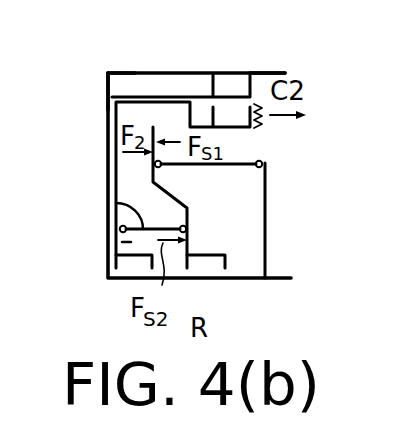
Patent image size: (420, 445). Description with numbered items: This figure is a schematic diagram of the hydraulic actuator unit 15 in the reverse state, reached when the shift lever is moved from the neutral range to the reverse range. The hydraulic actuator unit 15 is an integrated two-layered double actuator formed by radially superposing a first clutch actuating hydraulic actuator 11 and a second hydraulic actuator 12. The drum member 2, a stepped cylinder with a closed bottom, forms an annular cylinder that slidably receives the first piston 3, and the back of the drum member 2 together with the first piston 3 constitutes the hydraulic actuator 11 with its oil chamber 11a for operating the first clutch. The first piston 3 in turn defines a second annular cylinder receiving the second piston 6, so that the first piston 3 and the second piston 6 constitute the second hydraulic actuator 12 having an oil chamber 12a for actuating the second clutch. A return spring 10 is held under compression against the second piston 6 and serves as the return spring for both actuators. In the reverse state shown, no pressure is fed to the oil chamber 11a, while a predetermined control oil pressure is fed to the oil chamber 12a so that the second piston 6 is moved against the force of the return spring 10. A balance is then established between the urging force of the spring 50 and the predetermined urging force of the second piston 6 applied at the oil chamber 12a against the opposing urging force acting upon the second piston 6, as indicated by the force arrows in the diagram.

The drum member 2 is at (257, 72).
The first piston 3 is at (143, 97).
The second piston 6 is at (190, 100).
The spring 10 is at (233, 172).
The hydraulic actuator 11 is at (98, 125).
The oil chamber 11a is at (113, 87).
The second hydraulic actuator 12 is at (145, 173).
The oil chamber 12a is at (126, 243).
The hydraulic actuator unit 15 is at (108, 66).
The spring 50 is at (114, 206).